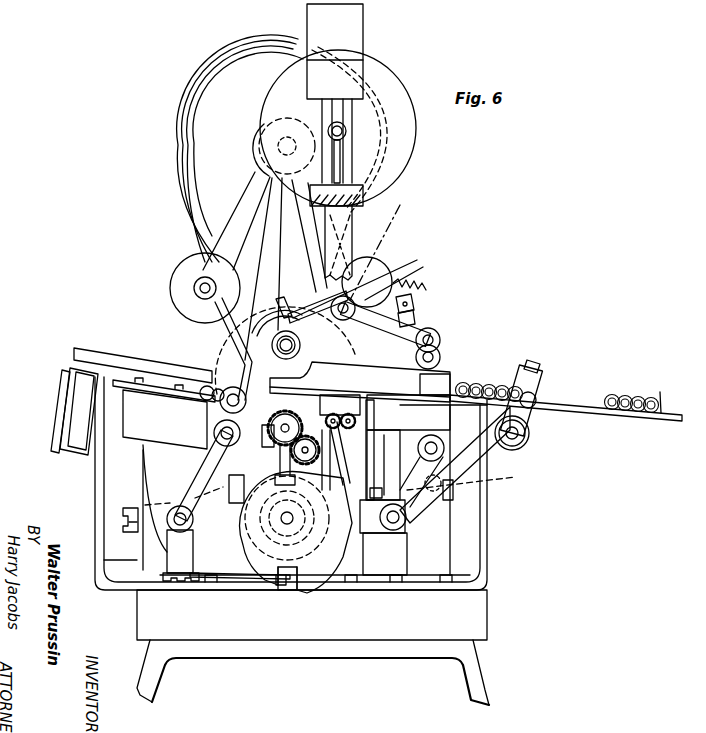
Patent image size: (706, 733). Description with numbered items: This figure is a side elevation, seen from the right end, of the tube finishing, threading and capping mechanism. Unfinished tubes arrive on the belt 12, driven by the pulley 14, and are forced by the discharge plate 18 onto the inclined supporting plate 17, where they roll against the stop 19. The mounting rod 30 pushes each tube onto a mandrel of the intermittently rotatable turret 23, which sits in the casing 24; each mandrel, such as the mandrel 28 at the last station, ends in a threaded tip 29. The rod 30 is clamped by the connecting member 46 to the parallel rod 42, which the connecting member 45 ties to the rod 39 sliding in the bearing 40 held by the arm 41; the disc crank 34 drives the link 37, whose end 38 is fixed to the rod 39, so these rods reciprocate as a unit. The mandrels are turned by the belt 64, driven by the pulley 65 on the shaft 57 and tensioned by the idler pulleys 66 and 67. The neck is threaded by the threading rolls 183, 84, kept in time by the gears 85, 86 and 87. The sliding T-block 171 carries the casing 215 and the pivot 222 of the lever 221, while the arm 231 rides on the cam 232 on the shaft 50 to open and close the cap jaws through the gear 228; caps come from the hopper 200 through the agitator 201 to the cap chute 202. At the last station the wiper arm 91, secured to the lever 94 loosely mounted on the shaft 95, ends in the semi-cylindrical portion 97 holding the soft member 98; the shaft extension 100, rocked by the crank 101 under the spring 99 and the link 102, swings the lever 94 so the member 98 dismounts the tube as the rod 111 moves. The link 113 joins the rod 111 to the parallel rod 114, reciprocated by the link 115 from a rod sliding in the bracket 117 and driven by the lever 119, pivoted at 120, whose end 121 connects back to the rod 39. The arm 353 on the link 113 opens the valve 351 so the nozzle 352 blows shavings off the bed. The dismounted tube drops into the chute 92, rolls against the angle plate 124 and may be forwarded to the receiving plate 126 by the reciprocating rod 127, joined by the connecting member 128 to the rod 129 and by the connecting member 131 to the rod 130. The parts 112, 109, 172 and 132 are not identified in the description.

The hopper 200 is at (364, 27).
The agitator 201 is at (392, 74).
The cap chute 202 is at (325, 108).
The belt 64 is at (193, 104).
The pulley 65 is at (248, 144).
The shaft 57 is at (258, 152).
The idler pulley 67 is at (185, 264).
The shaft 95 is at (386, 262).
The idler pulley 66 is at (410, 271).
The spring 99 is at (416, 284).
The crank 101 is at (425, 303).
The link 102 is at (420, 317).
The lever 94 is at (366, 322).
The shaft extension 100 is at (378, 316).
The roller 112 is at (441, 337).
The rod 111 is at (434, 342).
The lower roller 109 is at (440, 358).
The semi-cylindrical member 98 is at (297, 305).
The semi-cylindrical portion 97 is at (277, 304).
The casing 24 is at (278, 318).
The threaded tip 29 is at (277, 345).
The mandrel 28 is at (284, 358).
The wiper arm 91 is at (305, 325).
The stop 19 is at (222, 322).
The connecting member 46 is at (221, 385).
The gear 228 is at (356, 397).
The chute 92 is at (452, 380).
The discharge plate 18 is at (140, 362).
The supporting plate 17 is at (155, 393).
The mounting rod 30 is at (209, 428).
The parallel rod 42 is at (215, 434).
The belt 12 is at (82, 451).
The pulley 14 is at (60, 433).
The arm 41 is at (141, 459).
The connecting member 45 is at (196, 478).
The link 37 is at (137, 504).
The link end 38 is at (132, 533).
The disc crank 34 is at (143, 566).
The bearing 40 is at (180, 505).
The rod 39 is at (194, 525).
The lever end 121 is at (182, 555).
The lever 119 is at (240, 584).
The pivot 120 is at (278, 586).
The shaft 50 is at (296, 520).
The cam 232 is at (318, 592).
The threading roll 84 is at (312, 492).
The hub 172 is at (282, 518).
The T-block 171 is at (243, 477).
The gear 87 is at (275, 472).
The threading roll 183 is at (278, 445).
The gear 85 is at (291, 424).
The gear 86 is at (308, 442).
The turret 23 is at (280, 420).
The casing 215 is at (340, 411).
The arm 231 is at (343, 488).
The link 113 is at (430, 408).
The lever 221 is at (363, 430).
The pivot 222 is at (368, 452).
The bracket 117 is at (376, 457).
The nozzle 352 is at (380, 489).
The link 115 is at (417, 452).
The parallel rod 114 is at (442, 443).
The rod 130 is at (404, 524).
The block 132 is at (407, 566).
The valve 351 is at (447, 500).
The arm 353 is at (470, 488).
The connecting member 131 is at (492, 457).
The angle plate 124 is at (567, 410).
The receiving plate 126 is at (643, 418).
The connecting member 128 is at (537, 364).
The reciprocating rod 127 is at (547, 398).
The reciprocating rod 129 is at (520, 436).